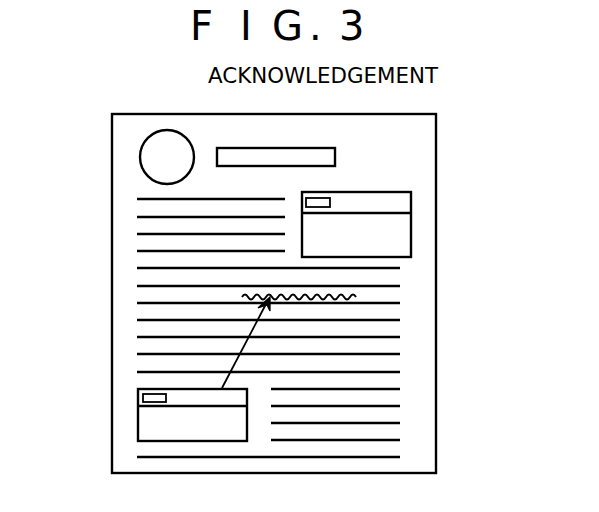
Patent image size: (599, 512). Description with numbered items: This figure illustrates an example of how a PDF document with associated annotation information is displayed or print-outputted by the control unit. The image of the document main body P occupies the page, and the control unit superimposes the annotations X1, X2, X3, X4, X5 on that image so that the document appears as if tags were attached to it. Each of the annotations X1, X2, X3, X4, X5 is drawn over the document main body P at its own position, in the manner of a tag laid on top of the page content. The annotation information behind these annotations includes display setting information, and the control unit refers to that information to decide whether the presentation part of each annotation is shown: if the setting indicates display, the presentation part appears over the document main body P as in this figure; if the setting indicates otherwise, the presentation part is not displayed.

The document main body P is at (410, 430).
The annotation X1 is at (411, 230).
The annotation X2 is at (169, 129).
The annotation X3 is at (356, 297).
The annotation X4 is at (217, 353).
The annotation X5 is at (137, 419).